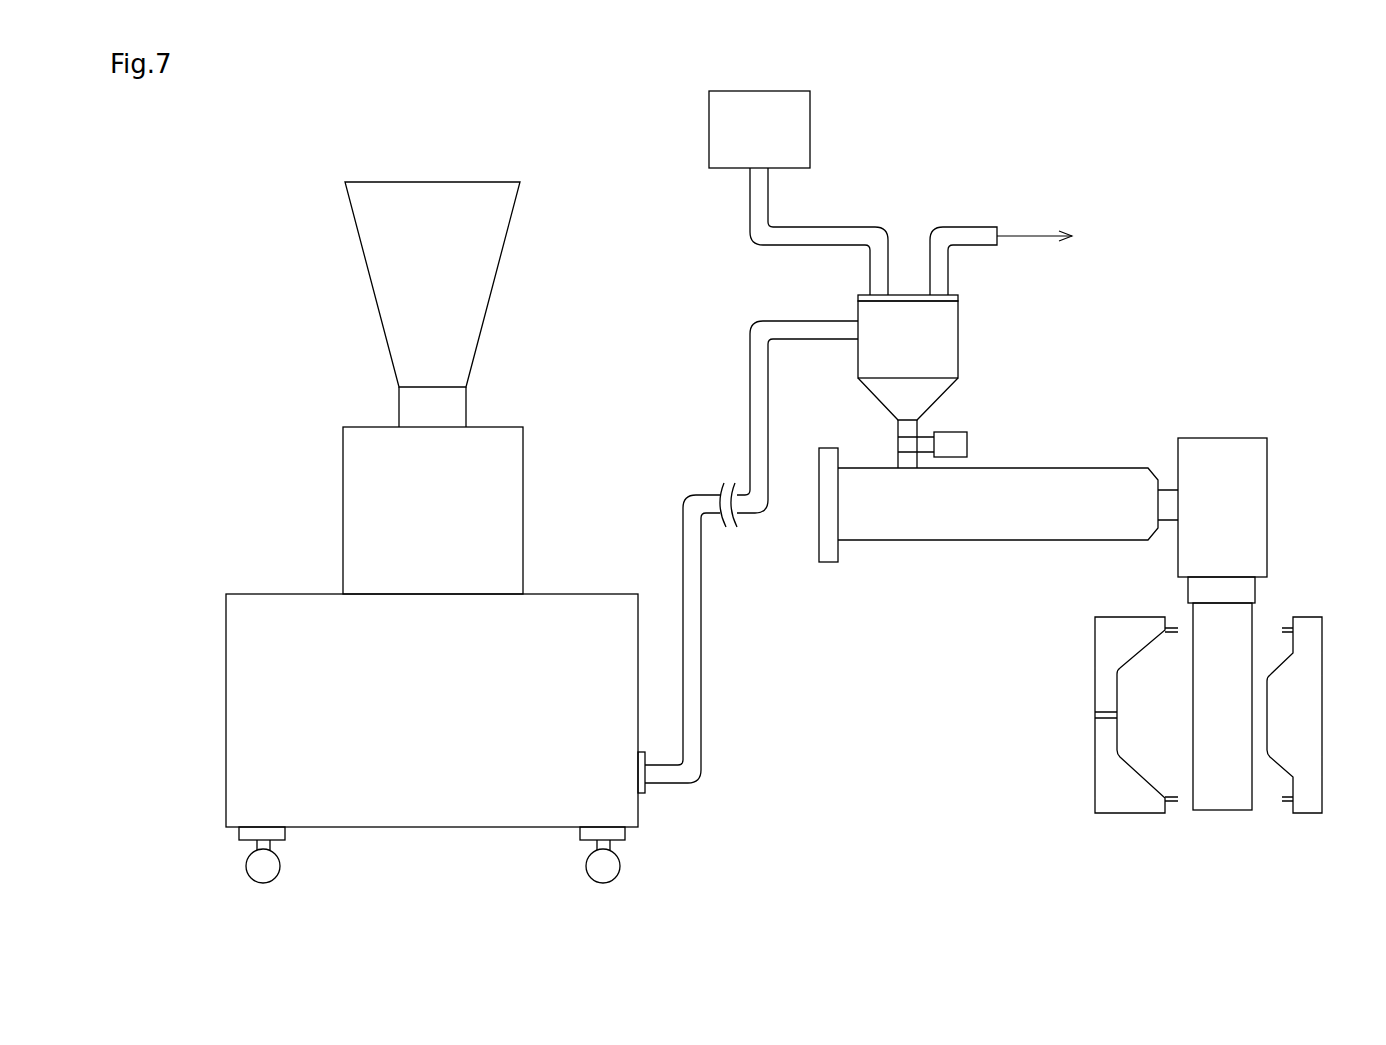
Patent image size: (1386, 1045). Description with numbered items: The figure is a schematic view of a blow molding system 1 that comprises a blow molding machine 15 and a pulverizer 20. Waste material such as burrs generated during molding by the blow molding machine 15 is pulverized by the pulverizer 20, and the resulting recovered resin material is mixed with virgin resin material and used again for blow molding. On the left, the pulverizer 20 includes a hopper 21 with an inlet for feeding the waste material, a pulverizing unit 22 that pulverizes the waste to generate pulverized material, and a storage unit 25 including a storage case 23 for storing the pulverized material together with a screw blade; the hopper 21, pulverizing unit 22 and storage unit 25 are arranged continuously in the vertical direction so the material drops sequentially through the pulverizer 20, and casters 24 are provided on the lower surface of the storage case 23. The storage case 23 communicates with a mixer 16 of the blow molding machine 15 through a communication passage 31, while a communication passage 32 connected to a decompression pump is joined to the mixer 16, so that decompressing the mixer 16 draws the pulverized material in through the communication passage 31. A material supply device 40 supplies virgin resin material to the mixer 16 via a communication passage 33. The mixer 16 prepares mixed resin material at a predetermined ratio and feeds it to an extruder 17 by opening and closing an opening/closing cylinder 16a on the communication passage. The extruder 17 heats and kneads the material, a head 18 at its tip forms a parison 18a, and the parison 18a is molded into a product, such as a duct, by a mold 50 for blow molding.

The blow molding system 1 is at (1098, 172).
The blow molding machine 15 is at (1120, 403).
The mixer 16 is at (938, 335).
The opening/closing cylinder 16a is at (957, 441).
The extruder 17 is at (985, 517).
The head 18 is at (1253, 483).
The parison 18a is at (1228, 640).
The pulverizer 20 is at (268, 227).
The hopper 21 is at (413, 202).
The pulverizing unit 22 is at (367, 488).
The storage case 23 is at (254, 668).
The casters 24 is at (254, 865).
The storage unit 25 is at (228, 574).
The communication passage 31 is at (693, 650).
The communication passage 32 is at (976, 233).
The communication passage 33 is at (823, 236).
The material supply device 40 is at (795, 108).
The mold 50 is at (1110, 823).